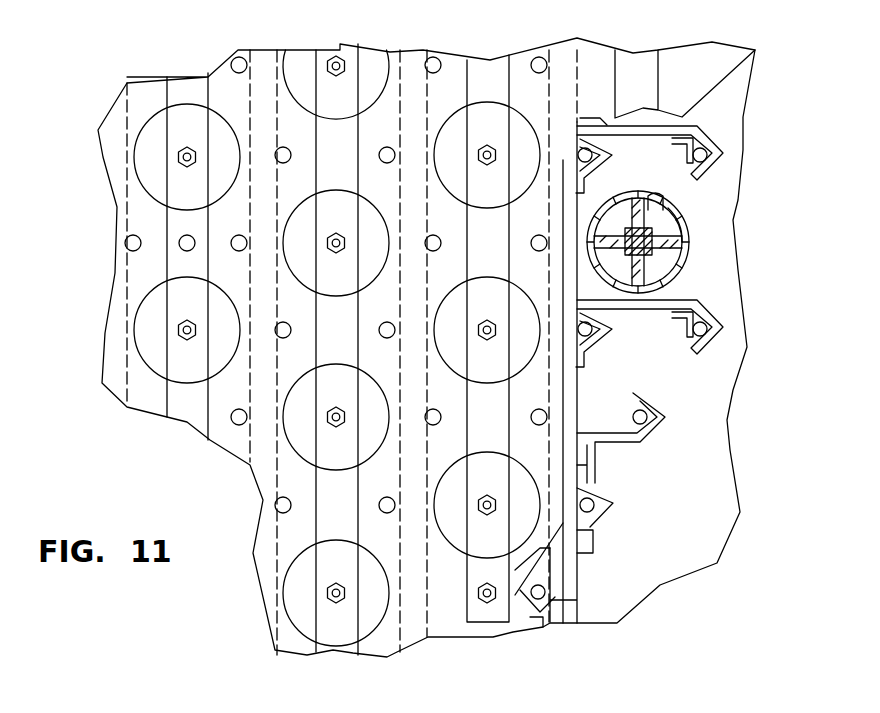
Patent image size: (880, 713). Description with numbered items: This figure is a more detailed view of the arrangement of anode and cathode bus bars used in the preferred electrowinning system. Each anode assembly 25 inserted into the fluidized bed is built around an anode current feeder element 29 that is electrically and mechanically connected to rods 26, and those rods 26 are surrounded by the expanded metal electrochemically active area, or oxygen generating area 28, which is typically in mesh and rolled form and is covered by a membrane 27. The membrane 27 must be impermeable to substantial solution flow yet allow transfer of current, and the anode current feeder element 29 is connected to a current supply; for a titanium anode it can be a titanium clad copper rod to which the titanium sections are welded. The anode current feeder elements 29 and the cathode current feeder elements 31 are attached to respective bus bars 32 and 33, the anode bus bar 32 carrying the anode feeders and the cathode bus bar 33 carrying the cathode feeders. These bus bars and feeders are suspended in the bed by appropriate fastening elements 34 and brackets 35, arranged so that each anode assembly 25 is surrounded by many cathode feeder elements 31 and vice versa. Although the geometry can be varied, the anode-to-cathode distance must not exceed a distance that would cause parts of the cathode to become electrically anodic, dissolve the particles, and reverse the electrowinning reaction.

The anode assembly 25 is at (375, 65).
The rods 26 is at (684, 258).
The membrane 27 is at (683, 211).
The oxygen generating area 28 is at (660, 208).
The anode current feeder element 29 is at (684, 237).
The cathode current feeder element 31 is at (238, 240).
The anode bus bar 32 is at (330, 482).
The cathode bus bar 33 is at (570, 412).
The fastening elements 34 is at (178, 157).
The brackets 35 is at (643, 432).